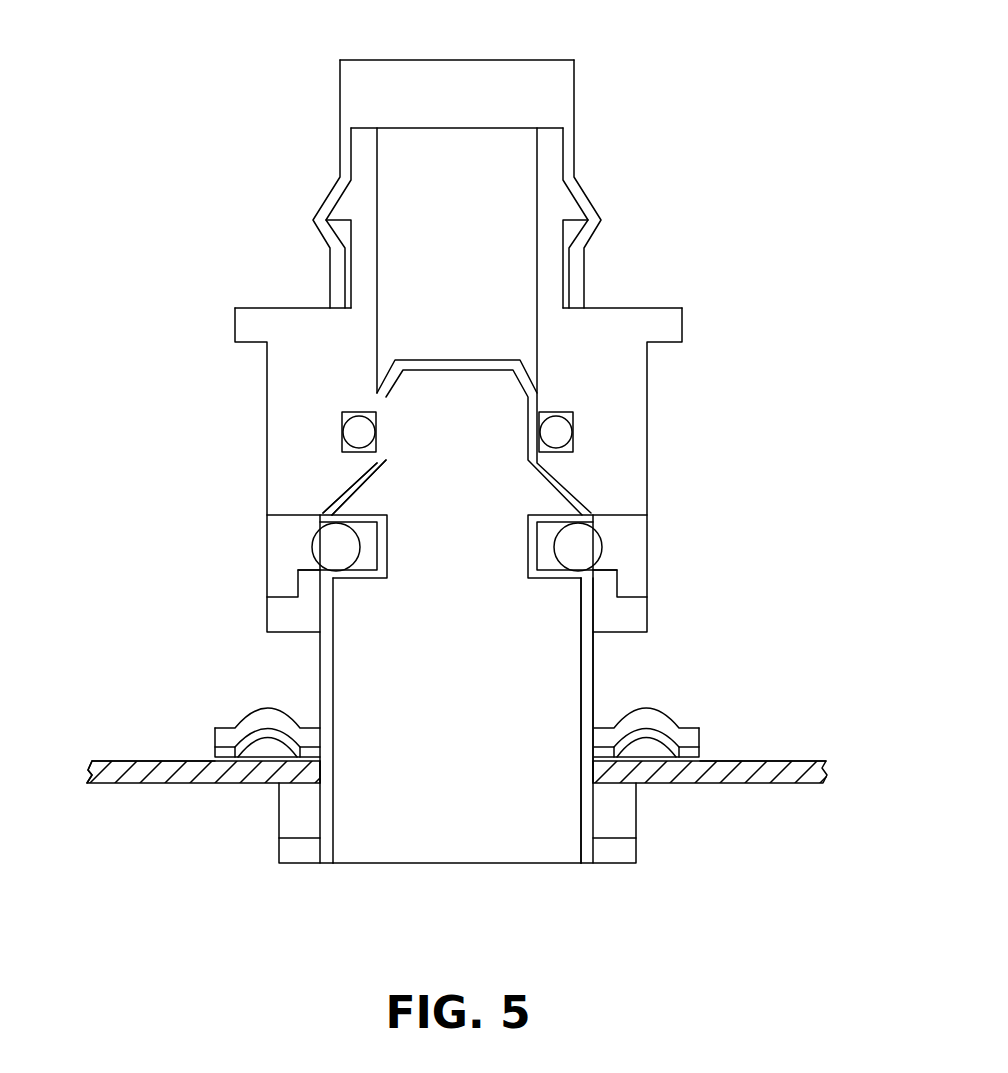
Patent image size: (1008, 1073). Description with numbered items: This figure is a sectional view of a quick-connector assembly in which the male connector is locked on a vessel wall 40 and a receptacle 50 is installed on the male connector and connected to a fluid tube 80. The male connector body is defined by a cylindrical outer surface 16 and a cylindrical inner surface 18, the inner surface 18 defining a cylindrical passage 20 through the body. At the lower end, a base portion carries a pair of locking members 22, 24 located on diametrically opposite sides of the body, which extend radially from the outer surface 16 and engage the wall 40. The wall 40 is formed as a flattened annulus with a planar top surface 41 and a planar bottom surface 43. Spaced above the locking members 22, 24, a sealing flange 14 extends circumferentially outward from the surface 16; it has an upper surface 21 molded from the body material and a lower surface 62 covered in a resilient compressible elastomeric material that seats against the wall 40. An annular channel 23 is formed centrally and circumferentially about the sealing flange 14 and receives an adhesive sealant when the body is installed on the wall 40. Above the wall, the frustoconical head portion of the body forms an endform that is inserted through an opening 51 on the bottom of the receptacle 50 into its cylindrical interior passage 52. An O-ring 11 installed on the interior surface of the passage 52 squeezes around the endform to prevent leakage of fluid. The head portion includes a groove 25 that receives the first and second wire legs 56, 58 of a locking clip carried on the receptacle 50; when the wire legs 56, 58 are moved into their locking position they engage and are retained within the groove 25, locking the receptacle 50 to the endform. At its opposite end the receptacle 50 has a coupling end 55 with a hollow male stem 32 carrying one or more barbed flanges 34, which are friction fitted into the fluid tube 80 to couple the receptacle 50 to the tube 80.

The fluid tube 80 is at (338, 147).
The coupling end 55 is at (616, 130).
The hollow male stem 32 is at (363, 258).
The barbed flange 34 is at (568, 203).
The receptacle 50 is at (676, 374).
The cylindrical interior passage 52 is at (509, 320).
The groove 25 is at (345, 495).
The O-ring 11 is at (355, 438).
The first wire leg 56 is at (325, 543).
The second wire leg 58 is at (583, 550).
The cylindrical outer surface 16 is at (320, 660).
The opening 51 is at (593, 630).
The cylindrical inner surface 18 is at (580, 688).
The cylindrical passage 20 is at (444, 846).
The locking member 22 is at (295, 822).
The locking member 24 is at (620, 805).
The upper surface 21 is at (252, 712).
The sealing flange 14 is at (702, 738).
The wall 40 is at (828, 776).
The planar top surface 41 is at (793, 757).
The planar bottom surface 43 is at (110, 785).
The lower surface 62 is at (215, 762).
The annular channel 23 is at (283, 745).